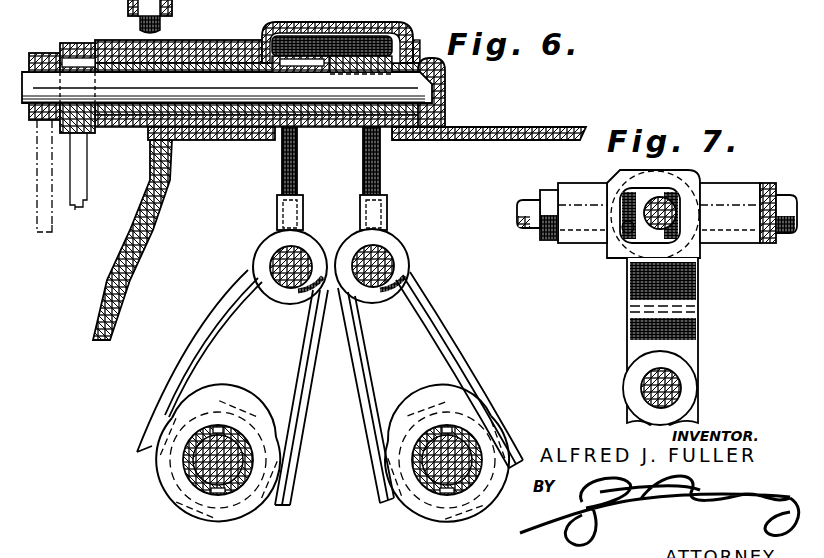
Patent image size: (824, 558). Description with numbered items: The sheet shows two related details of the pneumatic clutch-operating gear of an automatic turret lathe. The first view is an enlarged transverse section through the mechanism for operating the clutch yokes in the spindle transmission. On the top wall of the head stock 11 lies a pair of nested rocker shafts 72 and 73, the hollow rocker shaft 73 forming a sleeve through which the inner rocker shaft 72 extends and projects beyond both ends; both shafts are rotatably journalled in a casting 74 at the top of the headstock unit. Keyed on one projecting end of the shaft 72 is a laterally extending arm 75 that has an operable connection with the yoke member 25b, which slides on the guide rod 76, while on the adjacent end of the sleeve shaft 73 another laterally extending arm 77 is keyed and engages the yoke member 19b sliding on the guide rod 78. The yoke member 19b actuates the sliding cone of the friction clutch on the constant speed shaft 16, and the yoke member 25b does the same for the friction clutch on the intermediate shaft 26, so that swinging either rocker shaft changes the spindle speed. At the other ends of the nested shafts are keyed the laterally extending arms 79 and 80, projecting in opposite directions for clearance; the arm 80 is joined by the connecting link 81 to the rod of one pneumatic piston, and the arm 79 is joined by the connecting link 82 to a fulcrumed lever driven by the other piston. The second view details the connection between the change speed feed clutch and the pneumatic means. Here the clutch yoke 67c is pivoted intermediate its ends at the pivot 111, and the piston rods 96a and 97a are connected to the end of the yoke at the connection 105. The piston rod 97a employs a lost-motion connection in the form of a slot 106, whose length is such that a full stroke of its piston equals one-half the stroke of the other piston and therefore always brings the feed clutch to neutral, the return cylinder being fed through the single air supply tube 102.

In FIG. 6, the head stock 11 is at (524, 133).
In FIG. 6, the constant speed shaft 16 is at (210, 463).
In FIG. 6, the yoke member 19b is at (204, 338).
In FIG. 6, the yoke member 25b is at (436, 323).
In FIG. 6, the intermediate shaft 26 is at (437, 478).
In FIG. 6, the rocker shaft 72 is at (405, 87).
In FIG. 6, the hollow rocker shaft 73 is at (250, 63).
In FIG. 6, the casting 74 is at (262, 36).
In FIG. 6, the laterally extending arm 75 is at (381, 170).
In FIG. 6, the guide rod 76 is at (385, 258).
In FIG. 6, the laterally extending arm 77 is at (298, 170).
In FIG. 6, the guide rod 78 is at (280, 263).
In FIG. 6, the laterally extending arm 79 is at (42, 53).
In FIG. 6, the laterally extending arm 80 is at (78, 44).
In FIG. 6, the connecting link 81 is at (84, 165).
In FIG. 6, the connecting link 82 is at (52, 222).
In FIG. 6, the air supply tube 102 is at (158, 30).
In FIG. 7, the connection 105 is at (660, 197).
In FIG. 7, the slot 106 is at (633, 236).
In FIG. 7, the piston rod 96a is at (747, 192).
In FIG. 7, the piston rod 97a is at (530, 232).
In FIG. 7, the clutch yoke 67c is at (688, 345).
In FIG. 7, the pivot 111 is at (677, 389).